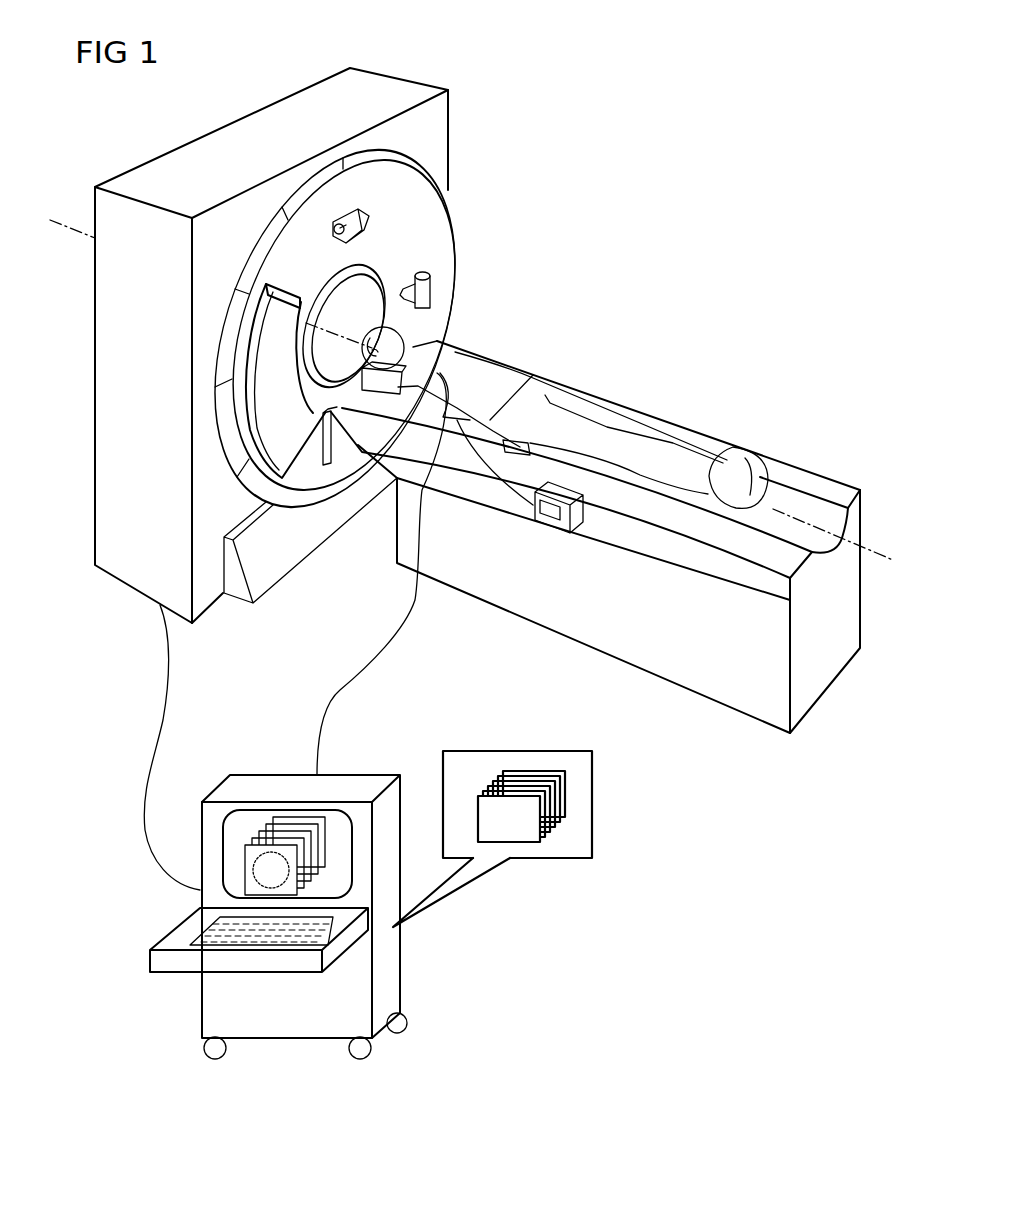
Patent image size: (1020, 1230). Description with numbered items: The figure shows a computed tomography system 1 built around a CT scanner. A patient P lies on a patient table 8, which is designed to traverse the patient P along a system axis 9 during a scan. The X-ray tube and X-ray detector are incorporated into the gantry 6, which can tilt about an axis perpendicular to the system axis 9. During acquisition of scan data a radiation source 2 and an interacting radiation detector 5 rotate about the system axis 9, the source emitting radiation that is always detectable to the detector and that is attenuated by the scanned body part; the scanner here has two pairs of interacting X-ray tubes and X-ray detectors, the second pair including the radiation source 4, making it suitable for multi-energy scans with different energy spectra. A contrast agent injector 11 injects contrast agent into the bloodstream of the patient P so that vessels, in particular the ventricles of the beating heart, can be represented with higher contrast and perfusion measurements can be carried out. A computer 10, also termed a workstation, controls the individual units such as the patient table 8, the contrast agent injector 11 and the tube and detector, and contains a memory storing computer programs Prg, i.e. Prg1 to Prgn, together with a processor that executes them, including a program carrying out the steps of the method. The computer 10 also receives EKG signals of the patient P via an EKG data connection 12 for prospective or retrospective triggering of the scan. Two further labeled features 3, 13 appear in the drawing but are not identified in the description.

The computed tomography system 1 is at (627, 255).
The radiation source 2 is at (372, 220).
The rotating detector arm 3 is at (277, 453).
The radiation source 4 is at (432, 291).
The radiation detector 5 is at (337, 448).
The gantry 6 is at (122, 553).
The patient table 8 is at (625, 633).
The system axis 9 is at (889, 550).
The computer 10 is at (392, 973).
The contrast agent injector 11 is at (548, 533).
The EKG data connection 12 is at (317, 742).
The control line 13 is at (144, 808).
The patient P is at (460, 347).
The computer programs Prg is at (527, 843).